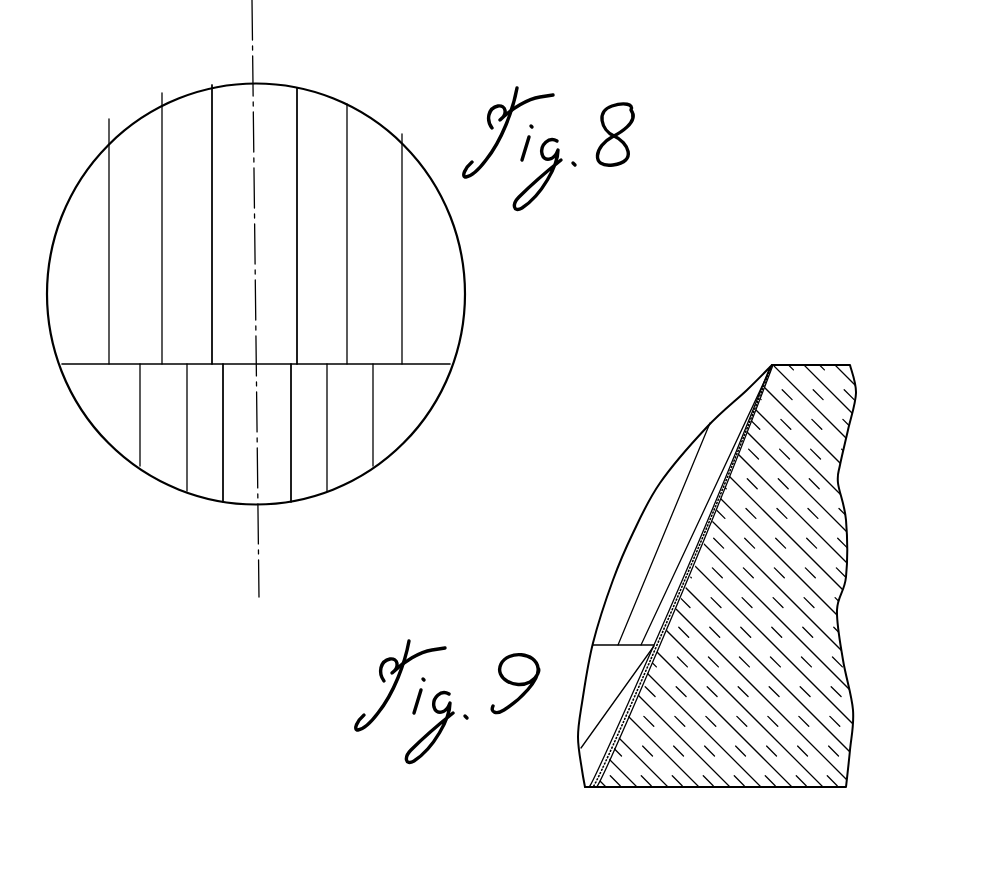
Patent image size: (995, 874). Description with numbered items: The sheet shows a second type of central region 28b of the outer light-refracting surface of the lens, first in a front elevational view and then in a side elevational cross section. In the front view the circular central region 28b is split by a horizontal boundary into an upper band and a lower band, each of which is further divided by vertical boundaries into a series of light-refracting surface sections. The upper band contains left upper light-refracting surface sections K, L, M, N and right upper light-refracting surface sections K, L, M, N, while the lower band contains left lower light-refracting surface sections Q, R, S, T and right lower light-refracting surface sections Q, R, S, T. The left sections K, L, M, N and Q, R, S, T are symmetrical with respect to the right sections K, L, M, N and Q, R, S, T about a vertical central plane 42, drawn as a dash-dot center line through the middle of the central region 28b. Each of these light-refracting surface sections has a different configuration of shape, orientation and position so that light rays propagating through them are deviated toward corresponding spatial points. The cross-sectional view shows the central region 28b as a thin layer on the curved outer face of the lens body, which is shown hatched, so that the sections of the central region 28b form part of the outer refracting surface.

In FIG. 8, the vertical central plane 42 is at (253, 58).
In FIG. 8, the central region 28b is at (443, 313).
In FIG. 9, the central region 28b is at (641, 540).
In FIG. 8, the light-refracting surface section K is at (254, 224).
In FIG. 8, the light-refracting surface section L is at (254, 224).
In FIG. 8, the light-refracting surface section M is at (254, 228).
In FIG. 8, the light-refracting surface section N is at (250, 241).
In FIG. 8, the light-refracting surface section Q is at (257, 433).
In FIG. 8, the light-refracting surface section R is at (259, 433).
In FIG. 8, the light-refracting surface section S is at (259, 427).
In FIG. 8, the light-refracting surface section T is at (260, 415).